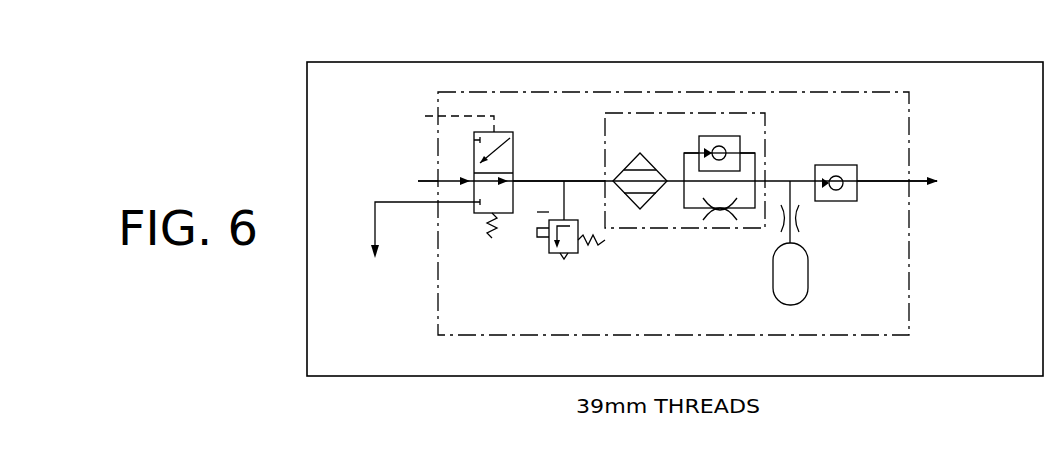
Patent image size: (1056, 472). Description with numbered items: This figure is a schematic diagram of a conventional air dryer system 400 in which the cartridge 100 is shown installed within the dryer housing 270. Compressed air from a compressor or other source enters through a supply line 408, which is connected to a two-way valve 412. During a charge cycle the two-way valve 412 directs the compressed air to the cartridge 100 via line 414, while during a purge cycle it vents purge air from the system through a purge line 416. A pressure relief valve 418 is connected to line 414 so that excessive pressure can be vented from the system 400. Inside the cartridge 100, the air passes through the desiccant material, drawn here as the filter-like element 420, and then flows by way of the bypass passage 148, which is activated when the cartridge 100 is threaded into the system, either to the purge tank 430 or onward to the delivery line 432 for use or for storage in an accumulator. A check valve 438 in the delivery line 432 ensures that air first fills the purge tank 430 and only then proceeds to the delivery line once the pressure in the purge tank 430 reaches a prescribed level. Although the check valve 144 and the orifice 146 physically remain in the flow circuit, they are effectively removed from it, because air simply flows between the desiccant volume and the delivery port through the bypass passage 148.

The air dryer system 400 is at (286, 98).
The dryer housing 270 is at (564, 88).
The cartridge 100 is at (708, 108).
The supply line 408 is at (428, 180).
The two-way valve 412 is at (502, 133).
The line 414 is at (593, 180).
The purge line 416 is at (375, 228).
The pressure relief valve 418 is at (580, 252).
The filter 420 is at (643, 206).
The bypass passage 148 is at (695, 176).
The check valve 144 is at (733, 137).
The orifice 146 is at (718, 215).
The purge tank 430 is at (808, 272).
The check valve 438 is at (830, 165).
The delivery line 432 is at (889, 180).